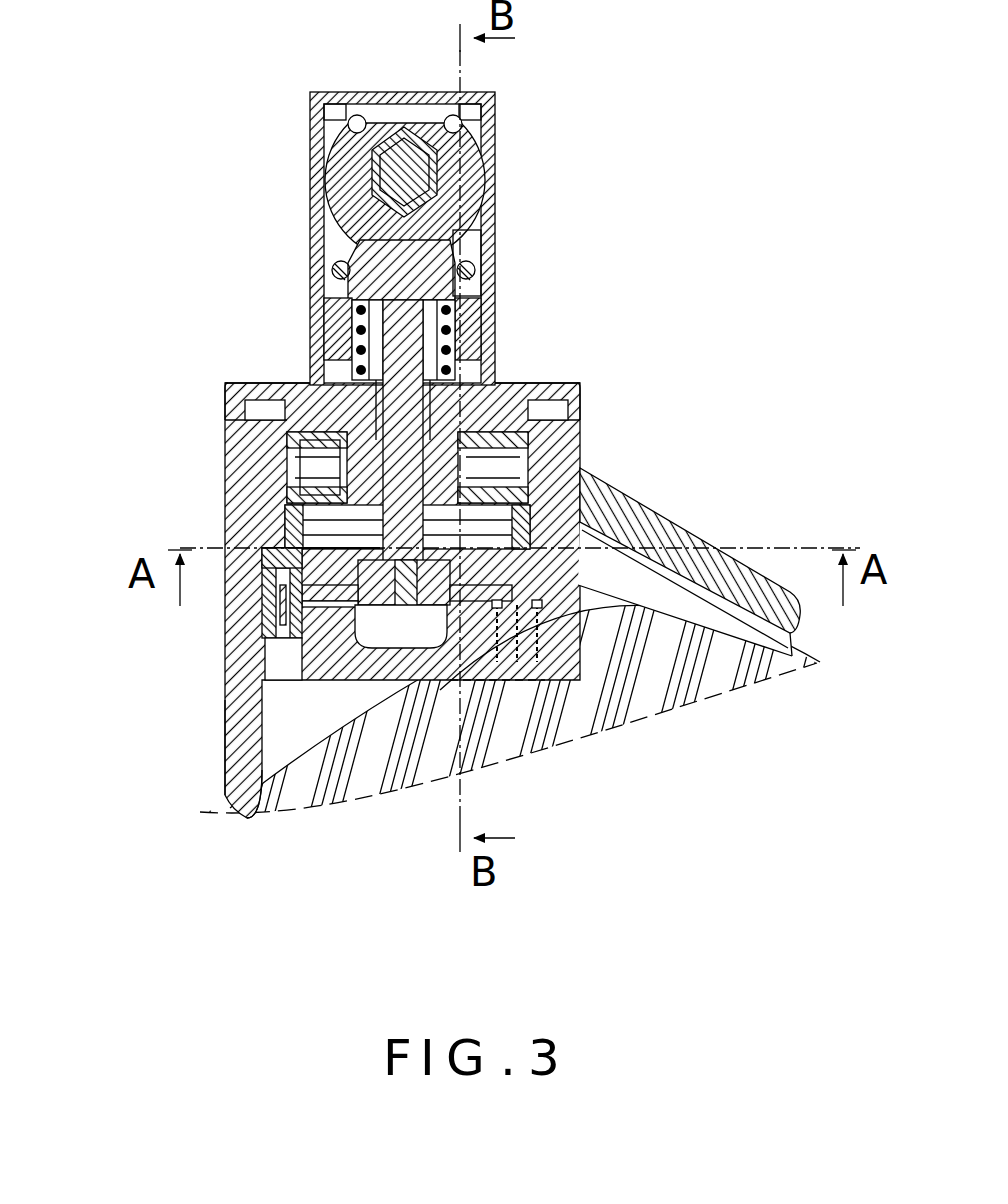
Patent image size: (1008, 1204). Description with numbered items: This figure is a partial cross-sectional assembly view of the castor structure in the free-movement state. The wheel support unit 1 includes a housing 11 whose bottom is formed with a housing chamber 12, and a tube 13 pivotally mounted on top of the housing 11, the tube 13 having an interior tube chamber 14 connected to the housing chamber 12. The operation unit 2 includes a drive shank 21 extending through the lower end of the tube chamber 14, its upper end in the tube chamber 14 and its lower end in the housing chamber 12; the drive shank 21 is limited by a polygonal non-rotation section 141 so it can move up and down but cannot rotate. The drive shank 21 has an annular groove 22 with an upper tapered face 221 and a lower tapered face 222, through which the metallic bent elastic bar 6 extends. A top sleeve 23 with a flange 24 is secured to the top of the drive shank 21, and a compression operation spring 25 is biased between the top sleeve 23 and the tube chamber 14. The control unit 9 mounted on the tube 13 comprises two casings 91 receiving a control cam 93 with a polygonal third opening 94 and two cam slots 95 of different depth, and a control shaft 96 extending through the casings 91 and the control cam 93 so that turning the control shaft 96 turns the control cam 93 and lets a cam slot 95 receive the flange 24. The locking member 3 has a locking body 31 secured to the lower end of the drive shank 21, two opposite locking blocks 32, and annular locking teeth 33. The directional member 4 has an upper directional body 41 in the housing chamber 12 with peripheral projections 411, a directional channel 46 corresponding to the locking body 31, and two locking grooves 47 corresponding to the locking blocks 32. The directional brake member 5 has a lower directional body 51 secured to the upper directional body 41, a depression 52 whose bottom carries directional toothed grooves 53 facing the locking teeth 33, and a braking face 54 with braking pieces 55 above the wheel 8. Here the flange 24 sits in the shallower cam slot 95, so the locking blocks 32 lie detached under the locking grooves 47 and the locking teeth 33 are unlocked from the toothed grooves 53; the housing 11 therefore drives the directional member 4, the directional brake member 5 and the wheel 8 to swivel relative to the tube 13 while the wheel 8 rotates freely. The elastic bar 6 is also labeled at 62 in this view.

The wheel support unit 1 is at (160, 905).
The operation unit 2 is at (112, 358).
The locking member 3 is at (721, 513).
The directional member 4 is at (122, 792).
The directional brake member 5 is at (292, 905).
The bent elastic bar 6 is at (497, 358).
The wheel 8 is at (703, 678).
The control unit 9 is at (186, 118).
The housing 11 is at (226, 762).
The housing chamber 12 is at (278, 784).
The tube 13 is at (313, 293).
The tube chamber 14 is at (350, 347).
The drive shank 21 is at (330, 425).
The annular groove 22 is at (367, 543).
The top sleeve 23 is at (474, 268).
The flange 24 is at (454, 245).
The operation spring 25 is at (462, 312).
The locking body 31 is at (580, 445).
The locking blocks 32 is at (580, 522).
The locking teeth 33 is at (582, 578).
The upper directional body 41 is at (262, 603).
The directional channel 46 is at (345, 640).
The locking grooves 47 is at (330, 592).
The lower directional body 51 is at (380, 655).
The depression 52 is at (320, 650).
The directional toothed grooves 53 is at (343, 640).
The braking face 54 is at (470, 647).
The braking pieces 55 is at (535, 647).
The flange rim 62 is at (532, 400).
The casings 91 is at (360, 106).
The control cam 93 is at (335, 163).
The third opening 94 is at (378, 188).
The cam slots 95 is at (362, 232).
The control shaft 96 is at (402, 165).
The non-rotation section 141 is at (387, 405).
The upper tapered face 221 is at (380, 510).
The lower tapered face 222 is at (300, 544).
The projections 411 is at (262, 568).